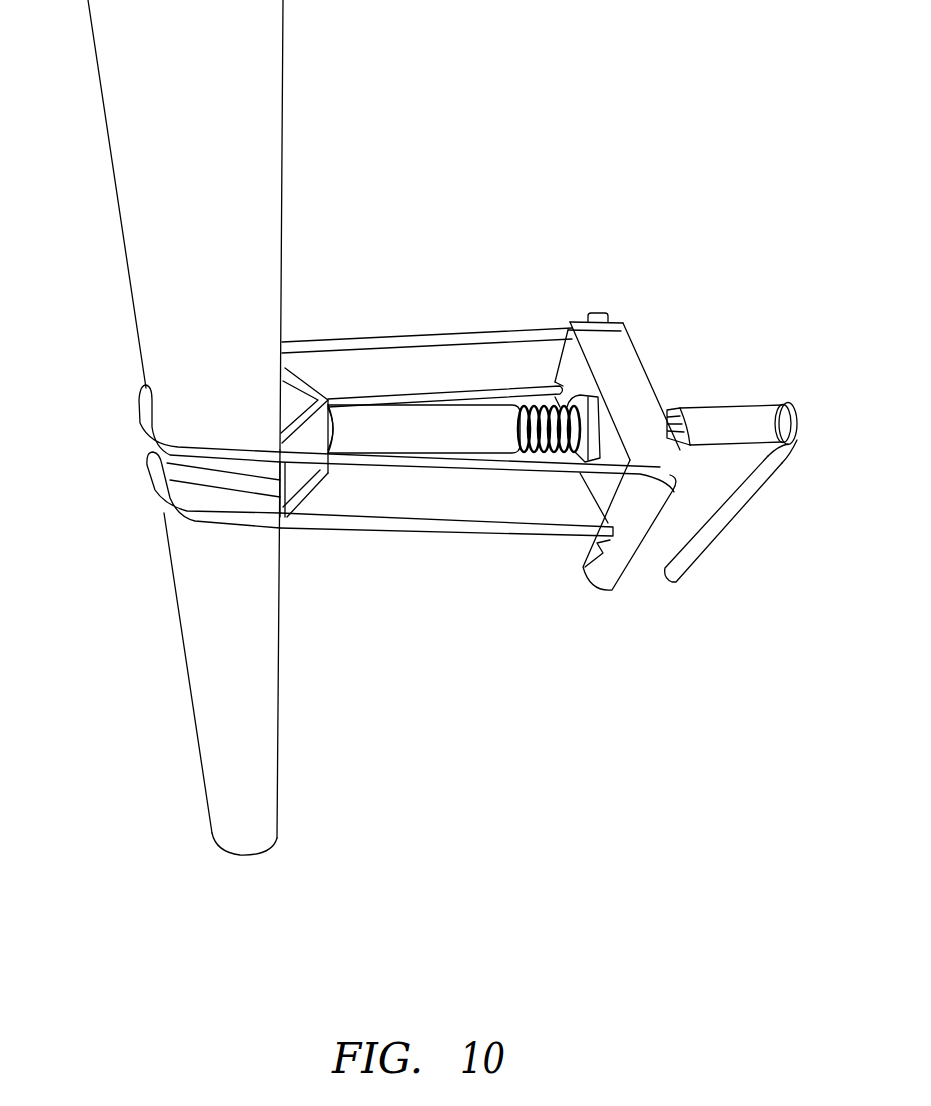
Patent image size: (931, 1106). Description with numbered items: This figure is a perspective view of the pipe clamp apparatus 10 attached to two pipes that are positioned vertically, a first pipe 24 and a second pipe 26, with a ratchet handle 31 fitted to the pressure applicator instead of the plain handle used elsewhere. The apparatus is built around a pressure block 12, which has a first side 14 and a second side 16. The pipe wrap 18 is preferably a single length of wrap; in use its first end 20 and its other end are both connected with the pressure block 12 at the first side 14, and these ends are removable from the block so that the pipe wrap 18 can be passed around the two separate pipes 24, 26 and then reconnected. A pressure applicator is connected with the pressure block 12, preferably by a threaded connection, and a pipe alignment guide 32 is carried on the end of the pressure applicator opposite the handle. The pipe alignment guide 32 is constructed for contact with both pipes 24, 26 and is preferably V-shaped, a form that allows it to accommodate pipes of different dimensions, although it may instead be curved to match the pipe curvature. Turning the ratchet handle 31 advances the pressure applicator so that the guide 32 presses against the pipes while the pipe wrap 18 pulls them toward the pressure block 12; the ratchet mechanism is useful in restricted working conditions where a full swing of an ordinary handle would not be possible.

The pipe clamp apparatus 10 is at (706, 229).
The pressure block 12 is at (620, 370).
The first side 14 is at (613, 337).
The second side 16 is at (670, 468).
The pipe wrap 18 is at (441, 336).
The first end 20 is at (599, 313).
The first pipe 24 is at (234, 312).
The second pipe 26 is at (253, 641).
The ratchet handle 31 is at (733, 413).
The pipe alignment guide 32 is at (305, 380).